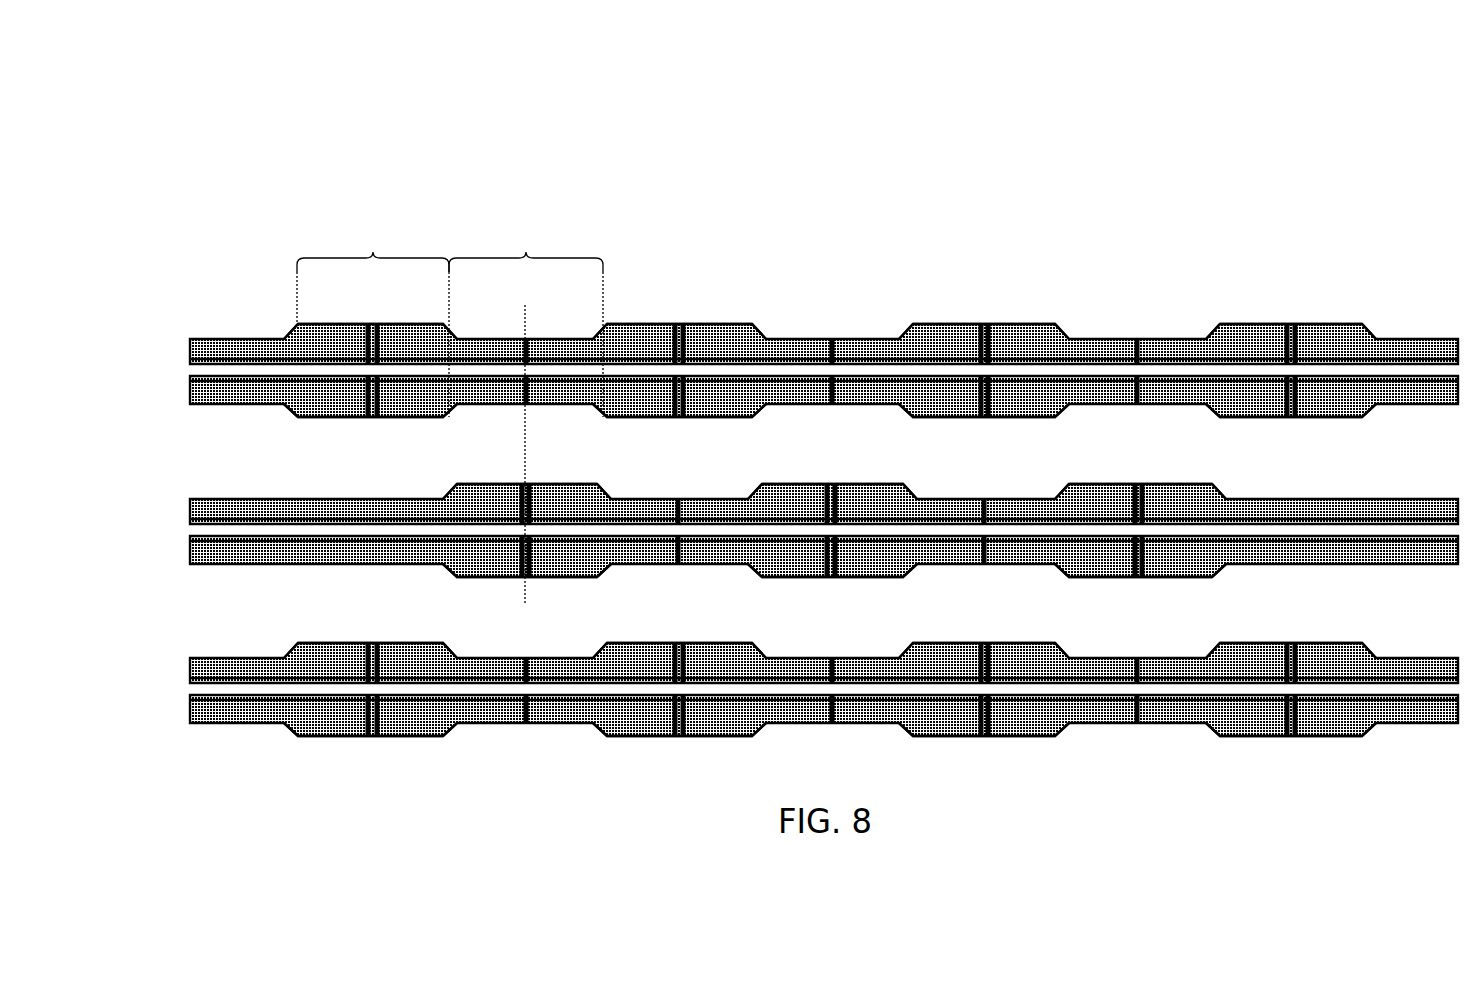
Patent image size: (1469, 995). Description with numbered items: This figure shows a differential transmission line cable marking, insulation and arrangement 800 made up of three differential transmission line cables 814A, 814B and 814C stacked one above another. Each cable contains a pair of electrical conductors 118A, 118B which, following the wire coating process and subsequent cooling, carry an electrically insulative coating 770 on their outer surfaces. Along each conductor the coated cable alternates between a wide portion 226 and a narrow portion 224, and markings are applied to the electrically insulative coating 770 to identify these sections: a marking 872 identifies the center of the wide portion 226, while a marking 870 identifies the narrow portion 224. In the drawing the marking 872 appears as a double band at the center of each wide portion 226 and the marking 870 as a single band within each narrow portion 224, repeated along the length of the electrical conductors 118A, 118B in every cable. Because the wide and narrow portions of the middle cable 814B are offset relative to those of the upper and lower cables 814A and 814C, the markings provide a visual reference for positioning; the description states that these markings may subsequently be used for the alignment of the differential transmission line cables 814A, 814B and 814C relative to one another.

The differential transmission line cable marking, insulation and arrangement 800 is at (257, 217).
The differential transmission line cable 814A is at (785, 370).
The differential transmission line cable 814B is at (785, 530).
The differential transmission line cable 814C is at (785, 689).
The electrical conductor 118A is at (725, 337).
The electrical conductor 118B is at (730, 413).
The electrically insulative coating 770 is at (623, 327).
The marking 872 is at (376, 316).
The marking 870 is at (527, 334).
The wide portion 226 is at (373, 321).
The narrow portion 224 is at (526, 413).